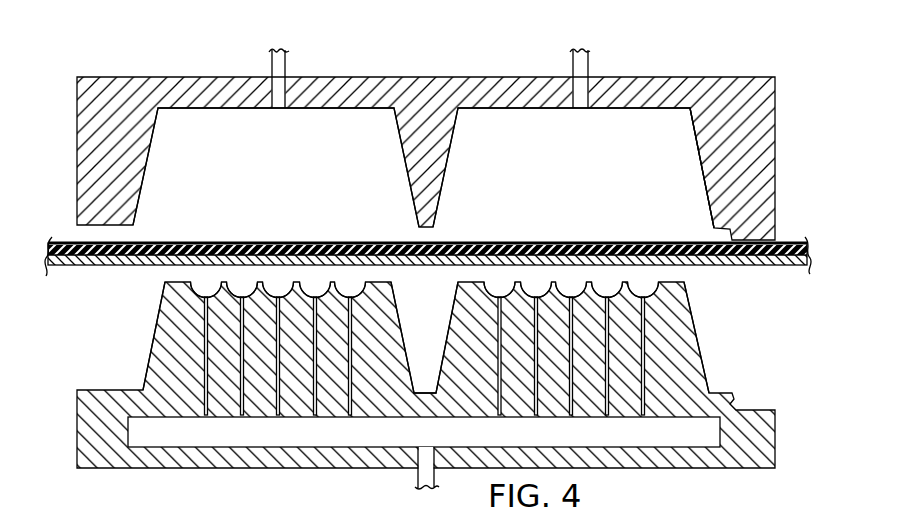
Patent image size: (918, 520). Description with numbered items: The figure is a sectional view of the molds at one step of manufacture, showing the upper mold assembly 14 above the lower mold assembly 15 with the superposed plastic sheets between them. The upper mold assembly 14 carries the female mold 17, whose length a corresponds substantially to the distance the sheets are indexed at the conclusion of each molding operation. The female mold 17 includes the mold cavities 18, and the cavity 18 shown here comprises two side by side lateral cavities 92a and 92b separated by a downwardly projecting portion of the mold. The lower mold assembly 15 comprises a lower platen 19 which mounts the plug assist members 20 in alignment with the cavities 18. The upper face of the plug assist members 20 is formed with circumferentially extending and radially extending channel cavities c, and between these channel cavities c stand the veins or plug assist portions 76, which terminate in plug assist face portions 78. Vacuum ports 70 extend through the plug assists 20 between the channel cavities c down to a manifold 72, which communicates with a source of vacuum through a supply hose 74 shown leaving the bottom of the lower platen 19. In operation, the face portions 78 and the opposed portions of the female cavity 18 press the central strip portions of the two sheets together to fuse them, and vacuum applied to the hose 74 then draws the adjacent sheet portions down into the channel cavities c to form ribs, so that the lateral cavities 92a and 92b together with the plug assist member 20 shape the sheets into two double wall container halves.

The upper mold assembly 14 is at (463, 141).
The lower mold assembly 15 is at (437, 350).
The female mold 17 is at (775, 70).
The mold cavities 18 is at (701, 166).
The lower platen 19 is at (776, 430).
The plug assist members 20 is at (150, 338).
The vacuum ports 70 is at (238, 396).
The manifold 72 is at (272, 438).
The supply hose 74 is at (418, 480).
The plug assist portions 76 is at (466, 292).
The plug assist face portions 78 is at (343, 292).
The lateral cavity 92a is at (248, 144).
The lateral cavity 92b is at (561, 144).
The length of the mold a is at (775, 29).
The channel cavities c is at (326, 250).